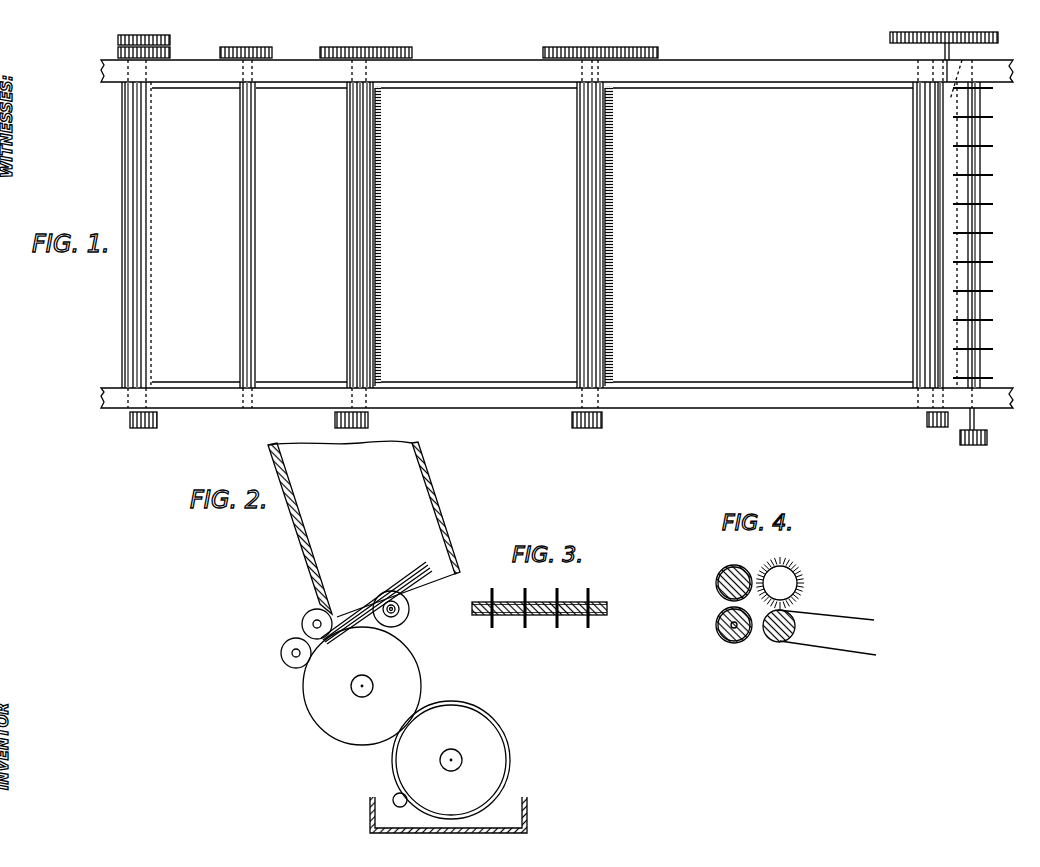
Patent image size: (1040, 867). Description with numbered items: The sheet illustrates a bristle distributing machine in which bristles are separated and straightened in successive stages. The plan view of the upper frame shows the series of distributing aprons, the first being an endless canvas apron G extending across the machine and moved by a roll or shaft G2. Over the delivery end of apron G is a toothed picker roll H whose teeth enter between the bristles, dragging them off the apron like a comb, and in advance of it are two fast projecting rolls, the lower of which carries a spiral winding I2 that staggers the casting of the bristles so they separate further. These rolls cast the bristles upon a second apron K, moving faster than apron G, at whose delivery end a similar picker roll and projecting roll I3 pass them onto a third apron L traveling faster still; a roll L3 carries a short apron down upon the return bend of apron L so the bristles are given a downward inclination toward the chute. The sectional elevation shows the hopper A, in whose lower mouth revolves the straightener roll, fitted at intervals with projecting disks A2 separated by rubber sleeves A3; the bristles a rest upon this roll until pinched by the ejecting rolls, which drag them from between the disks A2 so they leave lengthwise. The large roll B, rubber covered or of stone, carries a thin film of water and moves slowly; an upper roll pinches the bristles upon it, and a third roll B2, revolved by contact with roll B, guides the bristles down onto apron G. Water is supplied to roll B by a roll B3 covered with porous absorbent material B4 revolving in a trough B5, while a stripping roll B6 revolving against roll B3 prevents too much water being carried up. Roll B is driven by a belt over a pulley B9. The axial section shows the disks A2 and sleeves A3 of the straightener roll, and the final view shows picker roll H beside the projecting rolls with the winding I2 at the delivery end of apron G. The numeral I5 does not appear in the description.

In FIG. 2, the hopper A is at (364, 529).
In FIG. 1, the projecting disks A2 is at (985, 212).
In FIG. 2, the projecting disks A2 is at (405, 618).
In FIG. 3, the projecting disks A2 is at (590, 600).
In FIG. 1, the sleeves A3 is at (982, 160).
In FIG. 3, the sleeves A3 is at (575, 616).
In FIG. 2, the bristles a is at (416, 575).
In FIG. 1, the large roll B is at (958, 56).
In FIG. 2, the large roll B is at (374, 684).
In FIG. 1, the third roll B2 is at (918, 318).
In FIG. 2, the third roll B2 is at (281, 658).
In FIG. 2, the roll B3 is at (463, 768).
In FIG. 2, the porous absorbent material B4 is at (492, 723).
In FIG. 2, the trough or tray B5 is at (372, 817).
In FIG. 2, the stripping roll B6 is at (395, 796).
In FIG. 1, the pulley B9 is at (998, 38).
In FIG. 1, the endless apron G is at (763, 235).
In FIG. 4, the endless apron G is at (858, 600).
In FIG. 1, the roll or shaft G2 is at (598, 58).
In FIG. 4, the roll or shaft G2 is at (787, 645).
In FIG. 1, the picker roll H is at (612, 210).
In FIG. 4, the picker roll H is at (790, 574).
In FIG. 4, the projecting roll I is at (716, 576).
In FIG. 1, the spiral winding I2 is at (240, 165).
In FIG. 4, the spiral winding I2 is at (728, 636).
In FIG. 1, the projecting roll I3 is at (347, 252).
In FIG. 1, the bearing nut I5 is at (157, 414).
In FIG. 1, the second apron K is at (416, 235).
In FIG. 1, the third apron L is at (196, 235).
In FIG. 1, the roll L3 is at (122, 90).